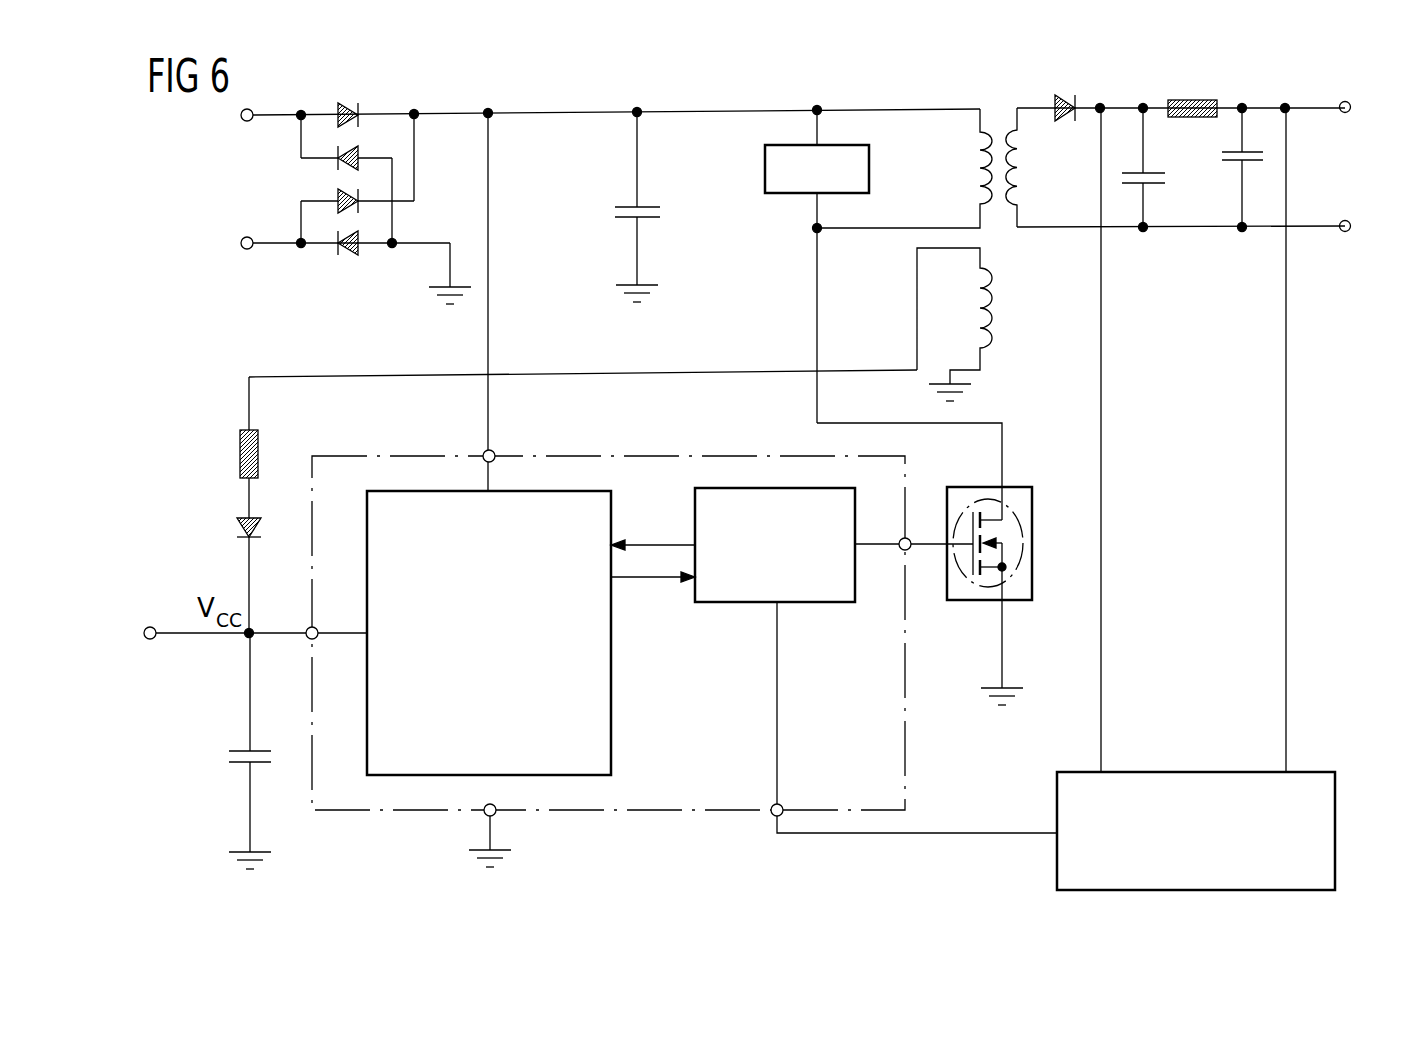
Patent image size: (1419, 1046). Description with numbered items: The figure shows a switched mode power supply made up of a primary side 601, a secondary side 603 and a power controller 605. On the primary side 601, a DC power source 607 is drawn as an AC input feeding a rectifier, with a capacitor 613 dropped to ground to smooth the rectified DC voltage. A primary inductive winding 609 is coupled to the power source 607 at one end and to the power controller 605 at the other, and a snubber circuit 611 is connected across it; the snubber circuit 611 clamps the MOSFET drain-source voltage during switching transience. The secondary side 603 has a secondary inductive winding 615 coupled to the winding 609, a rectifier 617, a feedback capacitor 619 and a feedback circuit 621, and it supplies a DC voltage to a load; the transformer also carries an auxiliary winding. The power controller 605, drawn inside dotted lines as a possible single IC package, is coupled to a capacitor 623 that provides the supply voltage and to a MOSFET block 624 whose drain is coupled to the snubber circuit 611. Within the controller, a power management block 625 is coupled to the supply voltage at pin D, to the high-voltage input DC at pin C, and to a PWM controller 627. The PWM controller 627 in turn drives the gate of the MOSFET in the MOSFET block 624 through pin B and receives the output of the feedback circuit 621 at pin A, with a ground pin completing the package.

The primary side 601 is at (745, 88).
The secondary side 603 is at (1308, 399).
The power controller 605 is at (689, 831).
The DC power source 607 is at (388, 98).
The primary inductive winding 609 is at (978, 178).
The snubber circuit 611 is at (765, 180).
The capacitor 613 is at (627, 203).
The secondary inductive winding 615 is at (1020, 178).
The rectifier 617 is at (1052, 100).
The feedback capacitor 619 is at (1167, 179).
The feedback circuit 621 is at (1195, 770).
The capacitor 623 is at (240, 750).
The MOSFET block 624 is at (962, 602).
The power management block 625 is at (612, 677).
The PWM controller 627 is at (818, 603).